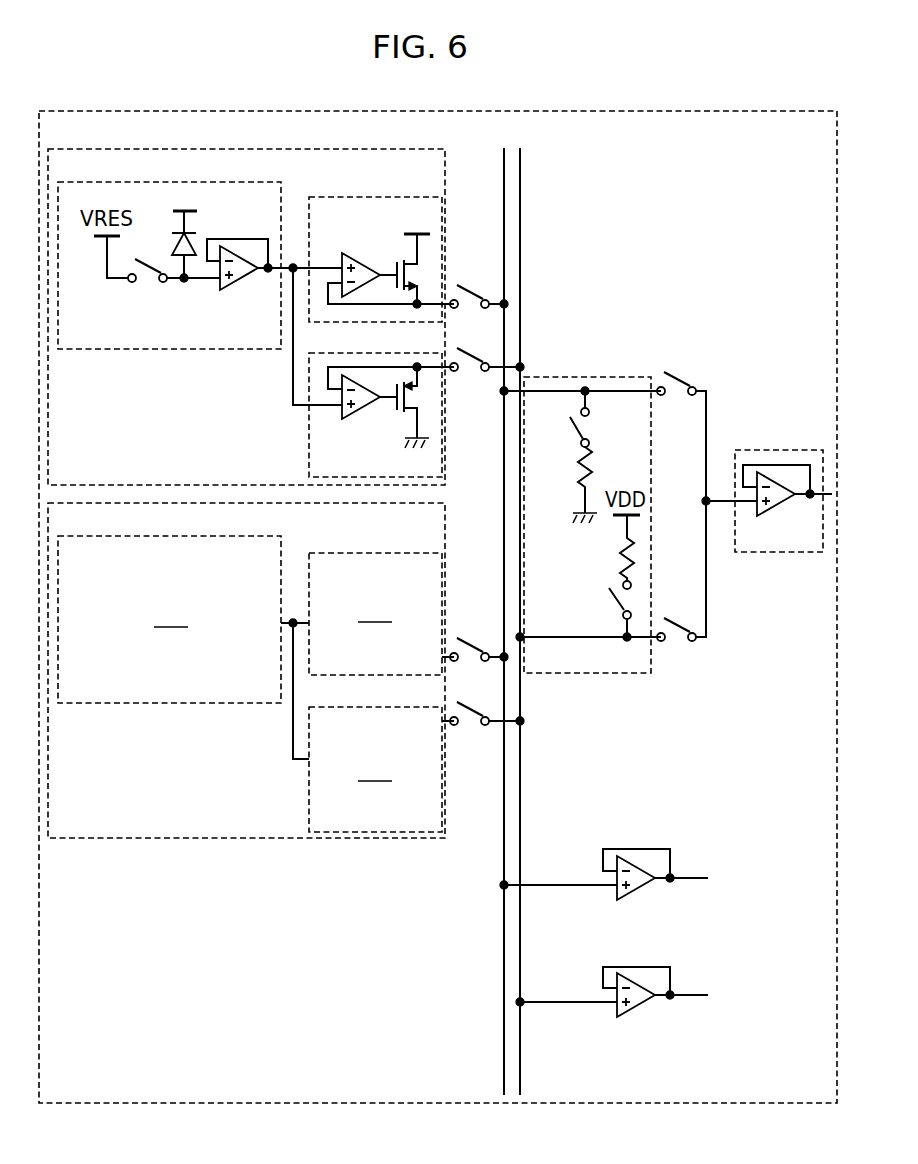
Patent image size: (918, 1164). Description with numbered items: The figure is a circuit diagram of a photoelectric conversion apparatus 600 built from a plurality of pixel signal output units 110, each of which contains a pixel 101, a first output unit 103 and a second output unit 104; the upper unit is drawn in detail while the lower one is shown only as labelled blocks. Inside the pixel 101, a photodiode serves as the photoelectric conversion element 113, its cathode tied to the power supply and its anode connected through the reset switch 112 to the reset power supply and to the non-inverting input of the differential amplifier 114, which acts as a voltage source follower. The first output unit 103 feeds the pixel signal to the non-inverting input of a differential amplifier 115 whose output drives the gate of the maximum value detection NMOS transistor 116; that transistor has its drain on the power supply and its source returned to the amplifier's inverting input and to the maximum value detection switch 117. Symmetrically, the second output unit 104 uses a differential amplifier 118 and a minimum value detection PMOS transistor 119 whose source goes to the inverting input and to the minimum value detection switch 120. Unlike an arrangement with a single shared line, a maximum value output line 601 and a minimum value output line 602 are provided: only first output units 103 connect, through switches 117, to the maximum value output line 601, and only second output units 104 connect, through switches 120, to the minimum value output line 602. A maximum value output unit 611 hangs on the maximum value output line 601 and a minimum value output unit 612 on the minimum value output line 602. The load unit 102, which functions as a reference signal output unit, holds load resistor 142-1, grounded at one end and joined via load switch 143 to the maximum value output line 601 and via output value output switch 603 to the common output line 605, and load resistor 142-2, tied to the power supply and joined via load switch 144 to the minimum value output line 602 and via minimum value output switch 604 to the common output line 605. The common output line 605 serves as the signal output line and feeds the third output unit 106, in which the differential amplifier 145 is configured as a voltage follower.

The photoelectric conversion apparatus 600 is at (624, 110).
The pixel signal output unit 110 is at (447, 165).
The pixel 101 is at (215, 182).
The load unit 102 is at (587, 377).
The first output unit 103 is at (355, 197).
The second output unit 104 is at (355, 353).
The third output unit 106 is at (780, 450).
The reset switch 112 is at (148, 284).
The photoelectric conversion element 113 is at (175, 250).
The differential amplifier 114 is at (240, 283).
The differential amplifier 115 is at (350, 254).
The maximum value detection NMOS transistor 116 is at (397, 262).
The maximum value detection switch 117 is at (472, 288).
The differential amplifier 118 is at (360, 412).
The minimum value detection PMOS transistor 119 is at (392, 412).
The minimum value detection switch 120 is at (470, 375).
The load resistor 142-1 is at (576, 477).
The load resistor 142-2 is at (616, 560).
The load switch 143 is at (570, 423).
The load switch 144 is at (612, 608).
The differential amplifier 145 is at (797, 508).
The maximum value output line 601 is at (506, 170).
The minimum value output line 602 is at (522, 190).
The output value output switch 603 is at (676, 400).
The minimum value output switch 604 is at (677, 646).
The common output line 605 is at (718, 505).
The maximum value output unit 611 is at (645, 892).
The minimum value output unit 612 is at (645, 1009).